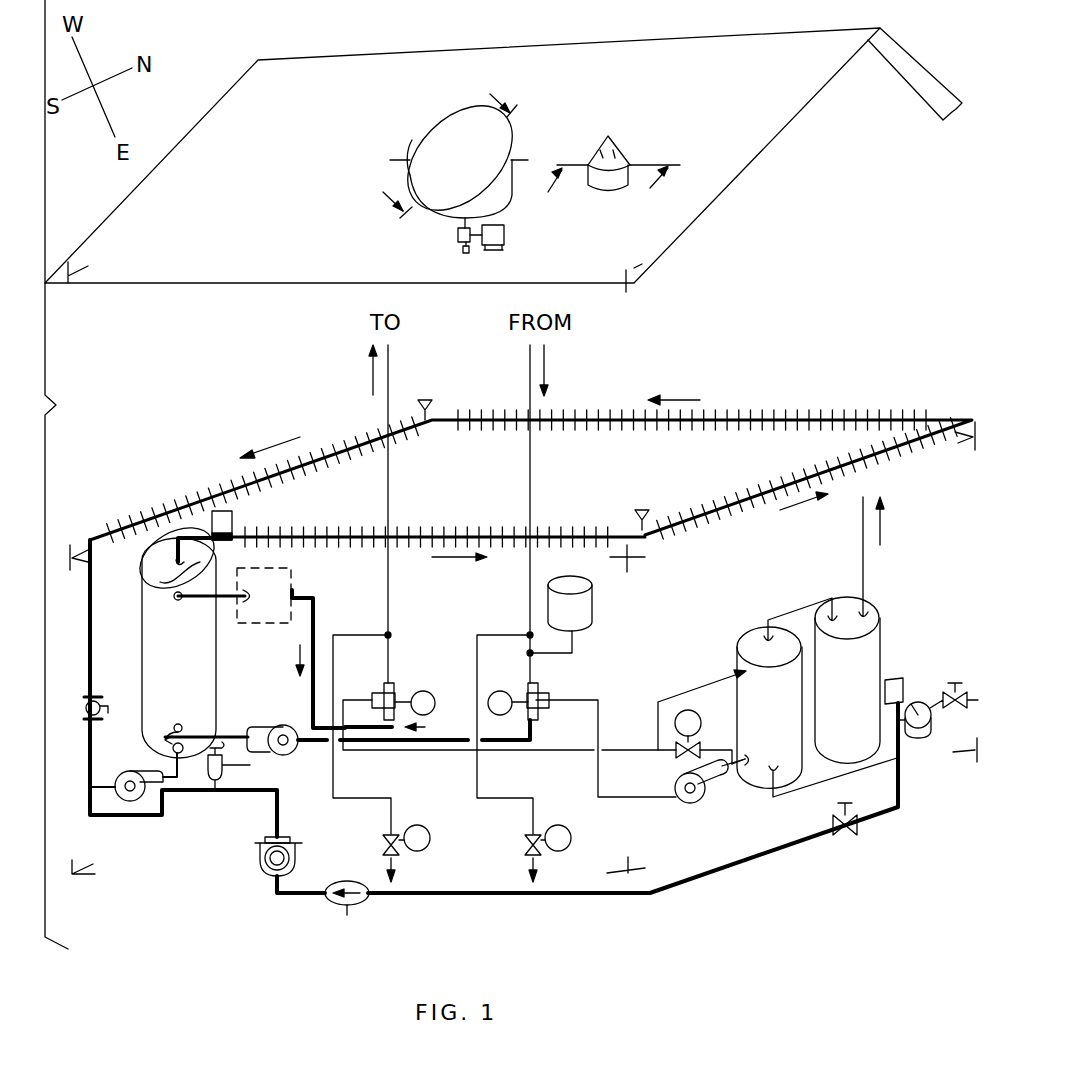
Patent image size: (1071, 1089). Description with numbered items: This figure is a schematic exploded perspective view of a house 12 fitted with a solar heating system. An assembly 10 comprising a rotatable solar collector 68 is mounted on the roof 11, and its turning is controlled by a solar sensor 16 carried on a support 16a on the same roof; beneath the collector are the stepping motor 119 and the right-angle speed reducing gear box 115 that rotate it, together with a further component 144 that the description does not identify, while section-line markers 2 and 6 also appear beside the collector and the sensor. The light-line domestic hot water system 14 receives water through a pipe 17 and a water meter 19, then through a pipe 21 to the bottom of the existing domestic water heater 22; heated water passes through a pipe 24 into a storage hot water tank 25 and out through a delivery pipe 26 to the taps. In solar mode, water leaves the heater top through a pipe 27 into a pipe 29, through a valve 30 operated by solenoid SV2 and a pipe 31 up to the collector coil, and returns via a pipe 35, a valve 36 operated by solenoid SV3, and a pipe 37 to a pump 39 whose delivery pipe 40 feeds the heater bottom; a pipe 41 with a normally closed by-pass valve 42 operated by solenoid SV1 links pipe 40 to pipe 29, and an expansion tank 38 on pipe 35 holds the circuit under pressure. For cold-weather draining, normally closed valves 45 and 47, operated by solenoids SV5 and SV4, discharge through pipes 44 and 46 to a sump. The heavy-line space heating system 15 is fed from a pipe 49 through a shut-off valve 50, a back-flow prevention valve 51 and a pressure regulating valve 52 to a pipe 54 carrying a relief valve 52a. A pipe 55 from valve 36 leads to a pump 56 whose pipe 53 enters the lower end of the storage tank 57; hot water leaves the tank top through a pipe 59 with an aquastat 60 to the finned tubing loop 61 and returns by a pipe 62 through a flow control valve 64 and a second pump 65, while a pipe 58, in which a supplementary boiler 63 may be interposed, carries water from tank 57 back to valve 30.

The section line 2- 2 is at (437, 149).
The section line 6- 6 is at (602, 195).
The assembly 10 is at (514, 142).
The roof 11 is at (702, 33).
The house 12 is at (71, 474).
The domestic hot water system 14 is at (798, 600).
The hot water heating equipment 15 is at (748, 402).
The solar sensor 16 is at (630, 154).
The support 16a is at (606, 192).
The pipe 17 is at (963, 688).
The water meter 19 is at (918, 738).
The pipe 21 is at (807, 795).
The domestic water heater 22 is at (783, 739).
The pipe 24 is at (783, 612).
The storage hot water tank 25 is at (860, 702).
The delivery pipe 26 is at (868, 558).
The pipe 27 is at (700, 680).
The pipe 29 is at (573, 752).
The valve 30 is at (395, 690).
The pipe 31 is at (390, 386).
The pipe 35 is at (527, 368).
The valve 36 is at (540, 692).
The pipe 37 is at (600, 705).
The expansion tank 38 is at (595, 606).
The pump 39 is at (696, 803).
The pipe 40 is at (733, 770).
The pipe 41 is at (730, 717).
The by-pass valve 42 is at (675, 752).
The pipe 44 is at (340, 770).
The valve 45 is at (383, 843).
The pipe 46 is at (477, 770).
The valve 47 is at (525, 843).
The pipe 49 is at (545, 895).
The shut-off valve 50 is at (852, 840).
The back-flow prevention valve 51 is at (368, 900).
The pressure regulating valve 52 is at (262, 852).
The safety or high pressure relief valve 52a is at (226, 782).
The pipe 53 is at (222, 737).
The pipe 54 is at (280, 818).
The pipe 55 is at (458, 737).
The pump 56 is at (272, 730).
The tank 57 is at (192, 677).
The pipe 58 is at (313, 603).
The pipe 59 is at (165, 590).
The aquastat 60 is at (233, 520).
The finned tubing loop 61 is at (437, 535).
The pipe 62 is at (90, 620).
The hot water heating boiler 63 is at (285, 615).
The flow control valve 64 is at (86, 710).
The second pump 65 is at (134, 771).
The solar collector 68 is at (422, 138).
The speed reducing gear box 115 is at (458, 235).
The stepping motor 119 is at (504, 236).
The sensor 144 is at (467, 254).
The solenoid SV1 is at (686, 712).
The solenoid SV2 is at (430, 685).
The solenoid SV3 is at (500, 691).
The solenoid SV4 is at (571, 835).
The solenoid SV5 is at (430, 835).